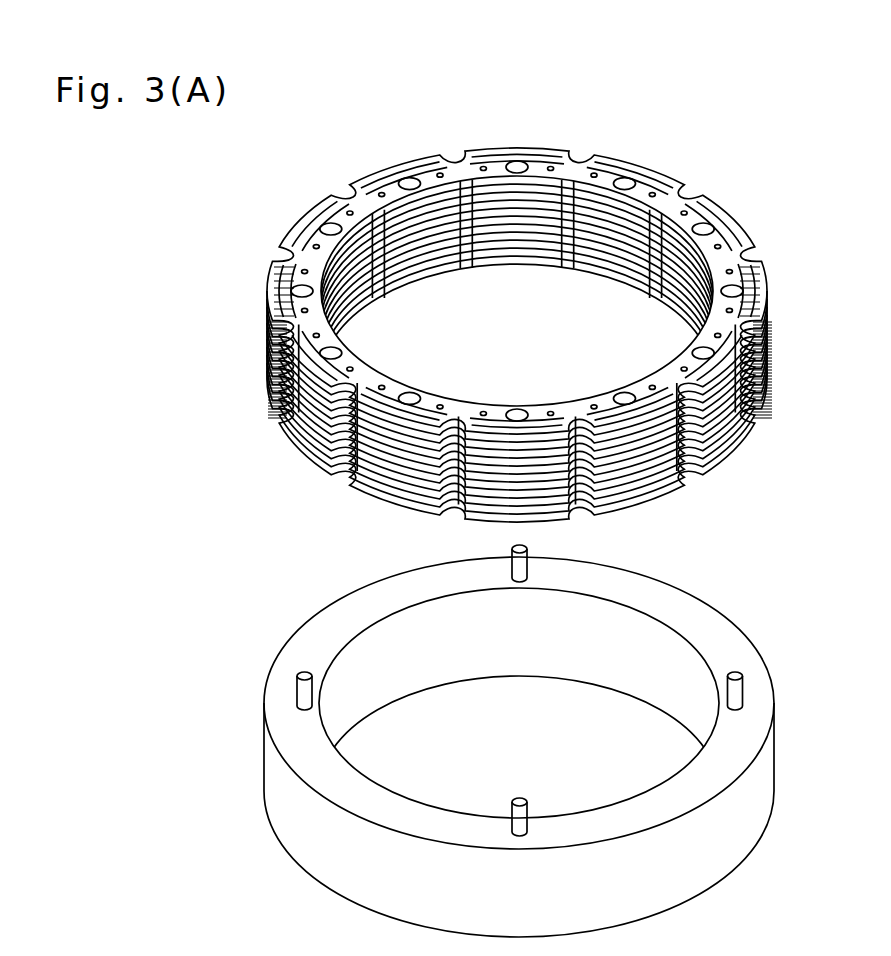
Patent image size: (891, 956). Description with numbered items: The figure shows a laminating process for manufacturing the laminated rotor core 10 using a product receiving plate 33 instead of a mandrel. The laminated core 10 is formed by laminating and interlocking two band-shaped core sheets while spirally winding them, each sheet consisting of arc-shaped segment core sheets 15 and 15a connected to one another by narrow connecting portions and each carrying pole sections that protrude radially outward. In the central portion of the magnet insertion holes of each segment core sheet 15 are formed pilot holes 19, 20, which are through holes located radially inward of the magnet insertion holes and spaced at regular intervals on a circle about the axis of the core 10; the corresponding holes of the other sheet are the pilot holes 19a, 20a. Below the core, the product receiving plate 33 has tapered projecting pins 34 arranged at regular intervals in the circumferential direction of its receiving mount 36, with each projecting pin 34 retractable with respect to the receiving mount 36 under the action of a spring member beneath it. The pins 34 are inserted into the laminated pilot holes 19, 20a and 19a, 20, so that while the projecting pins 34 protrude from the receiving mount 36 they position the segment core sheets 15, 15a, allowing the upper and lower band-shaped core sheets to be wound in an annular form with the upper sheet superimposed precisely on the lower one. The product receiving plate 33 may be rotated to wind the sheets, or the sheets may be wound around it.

The laminated rotor core 10 is at (518, 303).
The segment core sheet 15 is at (352, 344).
The segment core sheet 15a is at (650, 198).
The pilot hole 19 is at (519, 160).
The pilot hole 19a is at (627, 176).
The pilot hole 20 is at (403, 180).
The pilot hole 20a is at (712, 230).
The product receiving plate 33 is at (524, 735).
The projecting pin 34 is at (512, 552).
The receiving mount 36 is at (750, 718).